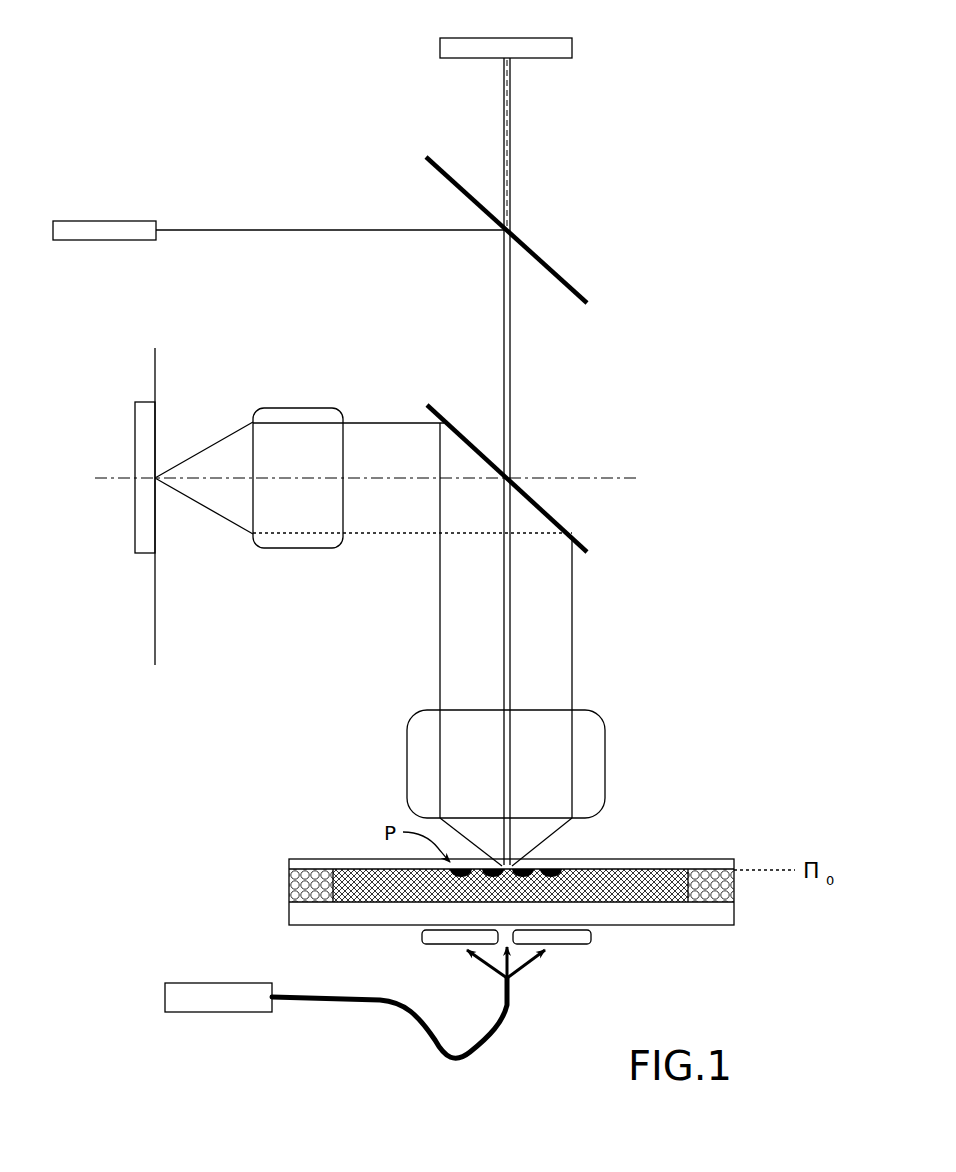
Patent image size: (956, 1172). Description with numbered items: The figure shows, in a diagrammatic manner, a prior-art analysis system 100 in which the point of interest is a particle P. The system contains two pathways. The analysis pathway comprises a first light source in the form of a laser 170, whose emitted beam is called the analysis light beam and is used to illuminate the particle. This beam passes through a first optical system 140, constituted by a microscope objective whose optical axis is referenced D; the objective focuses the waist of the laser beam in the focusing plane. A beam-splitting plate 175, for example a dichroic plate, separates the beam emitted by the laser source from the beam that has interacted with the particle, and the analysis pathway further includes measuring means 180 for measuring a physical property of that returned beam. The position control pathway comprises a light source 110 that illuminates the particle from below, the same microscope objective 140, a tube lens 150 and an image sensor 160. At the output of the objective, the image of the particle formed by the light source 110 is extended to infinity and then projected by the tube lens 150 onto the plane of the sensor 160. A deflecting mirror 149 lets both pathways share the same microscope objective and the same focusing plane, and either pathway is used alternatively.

The analysis system 100 is at (612, 151).
The light source 110 is at (225, 1017).
The first optical system 140 is at (614, 752).
The deflecting mirror 149 is at (568, 517).
The tube lens 150 is at (315, 398).
The image sensor 160 is at (140, 393).
The laser 170 is at (89, 213).
The beam-splitting plate 175 is at (581, 272).
The measuring means 180 is at (431, 62).